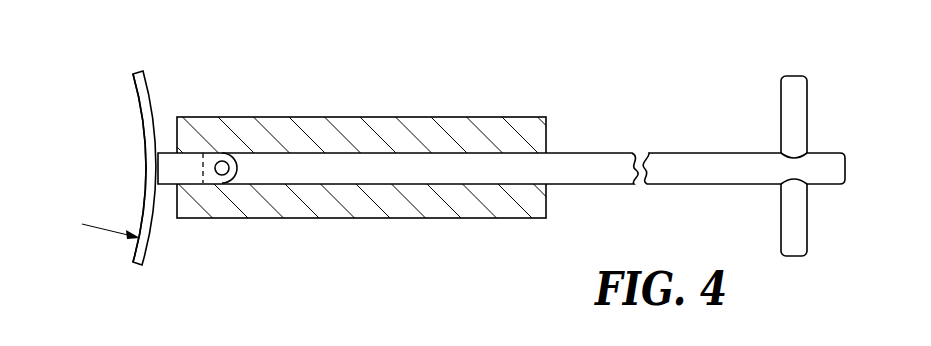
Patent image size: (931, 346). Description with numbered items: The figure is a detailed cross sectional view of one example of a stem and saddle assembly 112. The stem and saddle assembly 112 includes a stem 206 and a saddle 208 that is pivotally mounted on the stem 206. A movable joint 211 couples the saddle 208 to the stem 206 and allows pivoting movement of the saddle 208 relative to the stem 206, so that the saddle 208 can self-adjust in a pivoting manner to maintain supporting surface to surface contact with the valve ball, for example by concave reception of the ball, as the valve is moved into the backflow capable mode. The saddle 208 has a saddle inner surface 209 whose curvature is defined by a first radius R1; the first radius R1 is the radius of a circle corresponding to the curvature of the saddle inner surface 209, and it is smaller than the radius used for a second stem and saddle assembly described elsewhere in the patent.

The stem and saddle assembly 112 is at (695, 137).
The stem 206 is at (580, 153).
The saddle 208 is at (155, 97).
The saddle inner surface 209 is at (138, 93).
The movable joint 211 is at (222, 161).
The first radius R1 is at (138, 237).